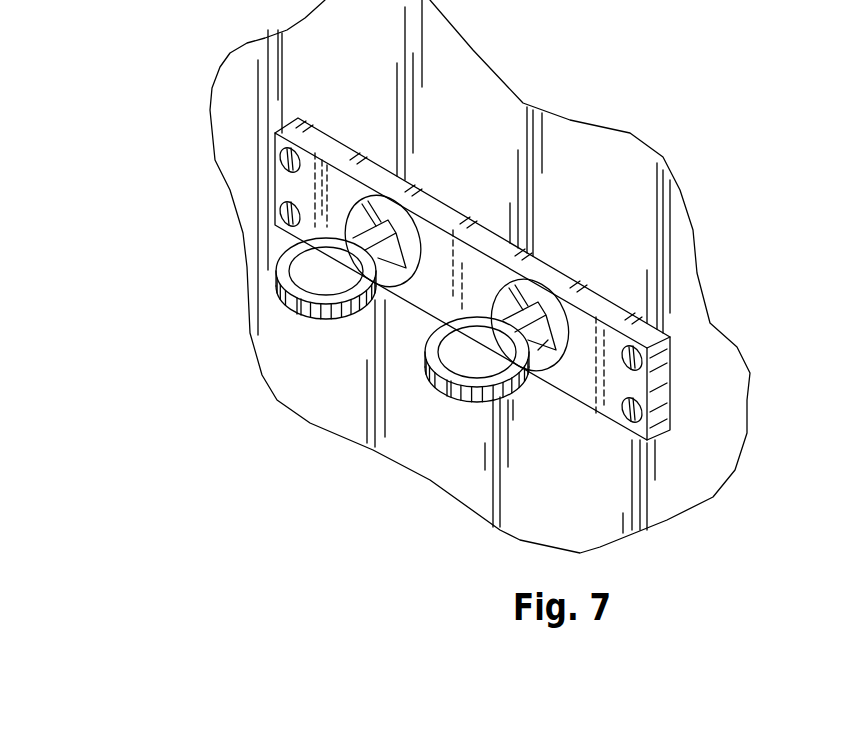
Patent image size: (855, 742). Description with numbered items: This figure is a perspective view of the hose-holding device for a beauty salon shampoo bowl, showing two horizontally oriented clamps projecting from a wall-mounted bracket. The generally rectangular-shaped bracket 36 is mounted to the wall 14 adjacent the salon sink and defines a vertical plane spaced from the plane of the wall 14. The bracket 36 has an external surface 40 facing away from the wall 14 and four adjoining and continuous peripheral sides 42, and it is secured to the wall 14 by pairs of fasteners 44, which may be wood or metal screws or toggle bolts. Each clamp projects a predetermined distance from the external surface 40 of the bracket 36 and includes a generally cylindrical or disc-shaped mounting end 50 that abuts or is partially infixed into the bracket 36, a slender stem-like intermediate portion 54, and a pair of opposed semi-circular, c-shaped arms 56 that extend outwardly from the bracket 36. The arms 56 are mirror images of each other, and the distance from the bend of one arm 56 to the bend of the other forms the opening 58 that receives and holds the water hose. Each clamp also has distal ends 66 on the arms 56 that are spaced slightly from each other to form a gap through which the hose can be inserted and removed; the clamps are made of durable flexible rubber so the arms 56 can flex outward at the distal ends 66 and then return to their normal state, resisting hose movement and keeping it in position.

The wall 14 is at (210, 153).
The bracket 36 is at (505, 251).
The external surface 40 is at (505, 265).
The peripheral sides 42 is at (662, 373).
The fasteners 44 is at (277, 160).
The mounting end 50 is at (400, 220).
The intermediate portion 54 is at (527, 297).
The arms 56 is at (422, 341).
The opening 58 is at (320, 278).
The distal end 66 is at (297, 305).